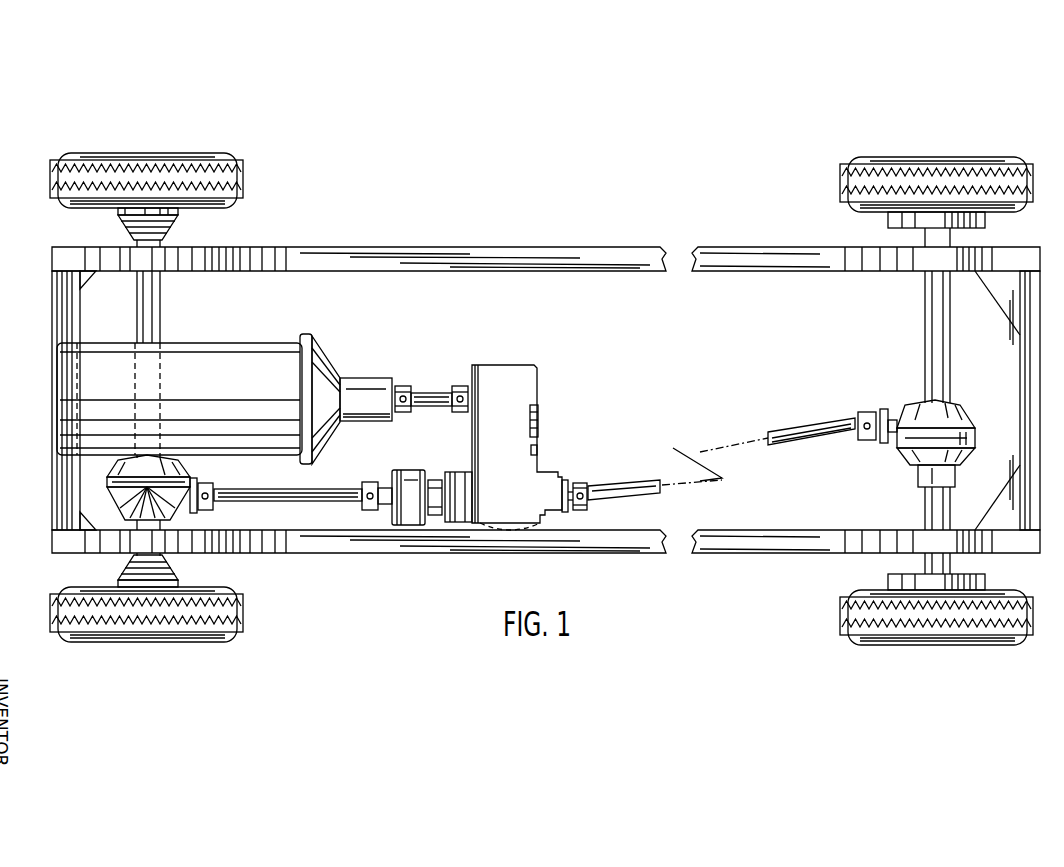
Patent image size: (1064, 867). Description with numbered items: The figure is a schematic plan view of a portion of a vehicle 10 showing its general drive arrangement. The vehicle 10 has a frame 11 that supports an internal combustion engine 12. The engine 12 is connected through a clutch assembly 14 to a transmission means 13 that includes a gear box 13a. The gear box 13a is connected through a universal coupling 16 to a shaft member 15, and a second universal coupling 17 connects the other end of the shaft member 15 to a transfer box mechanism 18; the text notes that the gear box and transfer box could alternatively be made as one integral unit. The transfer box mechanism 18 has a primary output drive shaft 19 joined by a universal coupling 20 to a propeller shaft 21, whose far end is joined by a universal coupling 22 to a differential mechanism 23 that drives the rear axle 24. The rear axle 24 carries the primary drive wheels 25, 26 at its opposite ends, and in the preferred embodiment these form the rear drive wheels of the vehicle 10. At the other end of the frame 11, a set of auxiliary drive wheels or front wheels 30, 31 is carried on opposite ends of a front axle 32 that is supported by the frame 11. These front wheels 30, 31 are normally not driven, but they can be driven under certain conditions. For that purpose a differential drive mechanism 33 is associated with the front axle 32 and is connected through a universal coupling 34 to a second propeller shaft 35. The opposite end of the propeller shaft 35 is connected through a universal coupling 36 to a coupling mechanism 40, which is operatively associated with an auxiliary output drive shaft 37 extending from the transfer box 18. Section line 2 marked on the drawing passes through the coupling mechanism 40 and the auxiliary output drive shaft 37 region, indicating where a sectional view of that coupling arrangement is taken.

The section line 2 is at (367, 484).
The vehicle 10 is at (153, 62).
The frame 11 is at (482, 250).
The internal combustion engine 12 is at (60, 396).
The transmission means 13 is at (401, 323).
The gear box 13a is at (355, 378).
The clutch assembly 14 is at (322, 438).
The shaft member 15 is at (439, 392).
The universal coupling 16 is at (400, 412).
The universal coupling 17 is at (460, 414).
The transfer box mechanism 18 is at (515, 367).
The primary output drive shaft 19 is at (569, 486).
The universal coupling 20 is at (580, 506).
The propeller shaft 21 is at (649, 482).
The universal coupling 22 is at (878, 412).
The differential mechanism 23 is at (911, 457).
The rear axle 24 is at (926, 497).
The primary drive wheel 25 is at (965, 160).
The primary drive wheel 26 is at (970, 645).
The front wheel 30 is at (147, 153).
The front wheel 31 is at (159, 640).
The front axle 32 is at (135, 294).
The differential drive mechanism 33 is at (120, 500).
The universal coupling 34 is at (213, 480).
The propeller shaft 35 is at (287, 505).
The universal coupling 36 is at (370, 508).
The auxiliary output drive shaft 37 is at (434, 471).
The coupling mechanism 40 is at (420, 468).